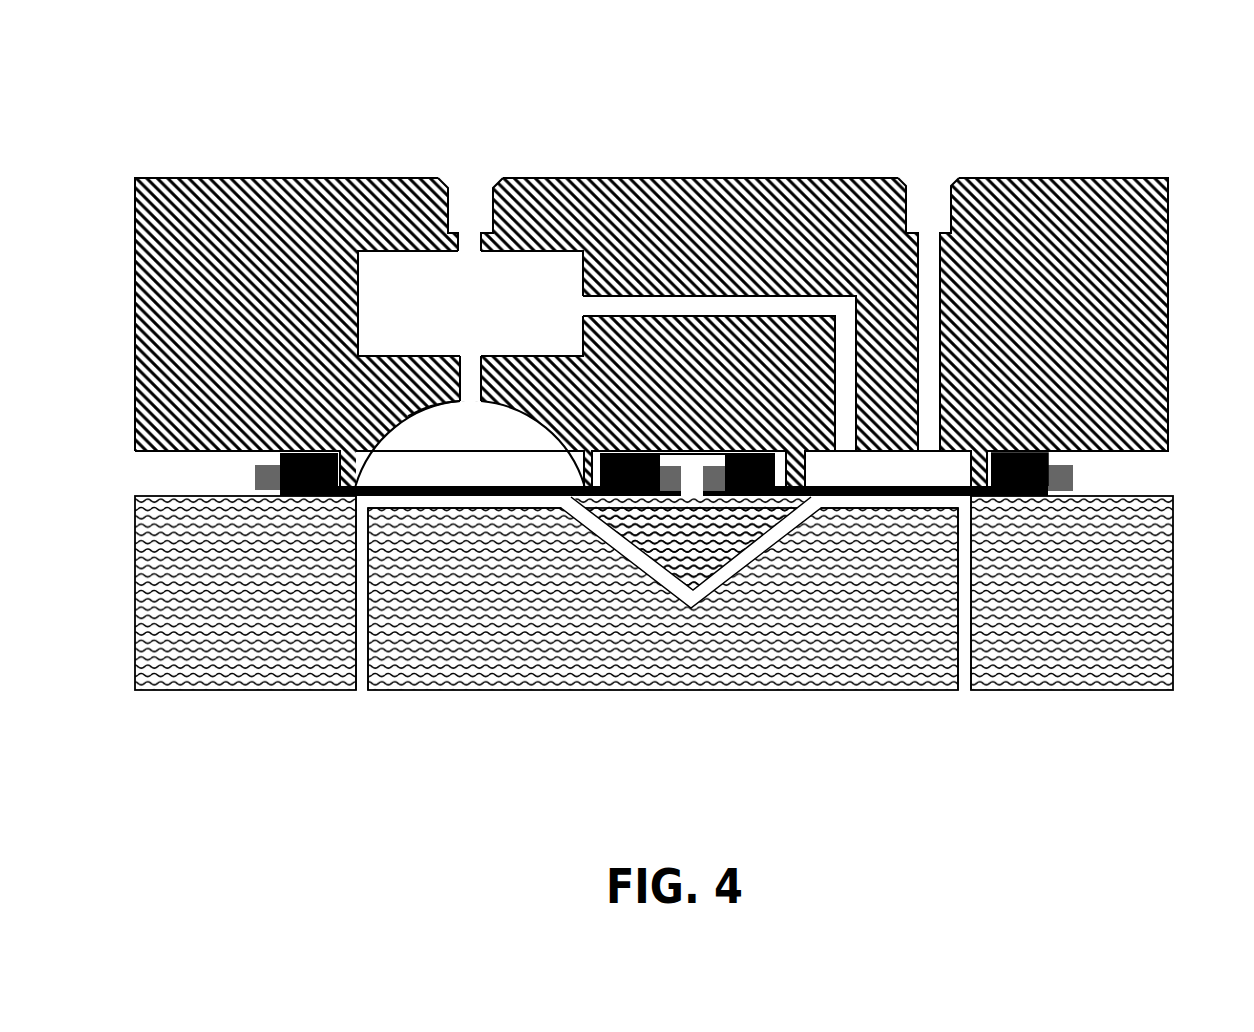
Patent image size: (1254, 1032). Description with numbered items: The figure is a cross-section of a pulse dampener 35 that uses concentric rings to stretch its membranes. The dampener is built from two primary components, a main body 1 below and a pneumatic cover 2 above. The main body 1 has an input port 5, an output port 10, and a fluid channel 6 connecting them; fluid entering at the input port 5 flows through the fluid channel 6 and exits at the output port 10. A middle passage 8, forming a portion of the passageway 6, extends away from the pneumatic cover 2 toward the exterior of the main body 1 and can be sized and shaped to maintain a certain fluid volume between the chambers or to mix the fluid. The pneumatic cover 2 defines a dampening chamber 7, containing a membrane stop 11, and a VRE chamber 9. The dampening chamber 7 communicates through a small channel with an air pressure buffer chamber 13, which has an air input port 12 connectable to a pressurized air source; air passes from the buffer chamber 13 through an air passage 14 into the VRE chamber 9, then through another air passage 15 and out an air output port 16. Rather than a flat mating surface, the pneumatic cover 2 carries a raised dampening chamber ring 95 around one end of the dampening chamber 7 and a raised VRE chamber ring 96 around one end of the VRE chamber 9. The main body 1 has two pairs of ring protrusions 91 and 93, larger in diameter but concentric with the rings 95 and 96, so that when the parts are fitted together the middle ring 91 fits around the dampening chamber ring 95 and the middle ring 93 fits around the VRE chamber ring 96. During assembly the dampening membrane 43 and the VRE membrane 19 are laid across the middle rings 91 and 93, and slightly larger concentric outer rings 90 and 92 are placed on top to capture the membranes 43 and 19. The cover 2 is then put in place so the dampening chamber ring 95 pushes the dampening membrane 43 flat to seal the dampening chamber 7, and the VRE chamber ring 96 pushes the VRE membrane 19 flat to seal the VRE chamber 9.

The main body 1 is at (1115, 590).
The pneumatic cover 2 is at (1035, 333).
The input port 5 is at (358, 688).
The fluid channel 6 is at (437, 505).
The dampening chamber 7 is at (470, 452).
The middle passage 8 is at (684, 600).
The VRE chamber 9 is at (888, 474).
The output port 10 is at (955, 688).
The membrane stop 11 is at (410, 397).
The air input port 12 is at (463, 190).
The air pressure buffer chamber 13 is at (477, 314).
The air passage 14 is at (712, 300).
The air passage 15 is at (935, 292).
The air output port 16 is at (920, 185).
The VRE membrane 19 is at (1040, 450).
The pulse dampener 35 is at (420, 730).
The dampening membrane 43 is at (268, 445).
The outer ring 90 is at (247, 470).
The ring protrusion 91 is at (298, 478).
The outer ring 92 is at (1065, 472).
The ring protrusion 93 is at (745, 472).
The dampening chamber ring 95 is at (578, 462).
The VRE chamber ring 96 is at (790, 462).